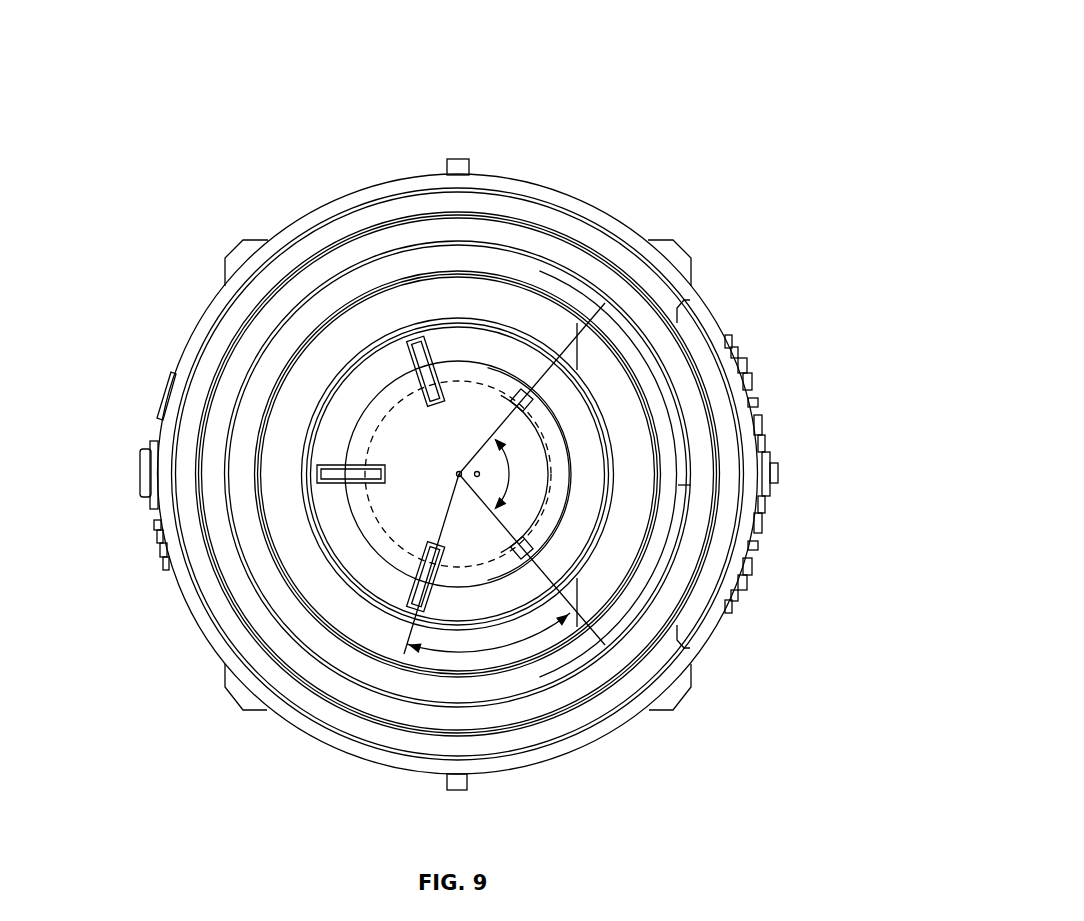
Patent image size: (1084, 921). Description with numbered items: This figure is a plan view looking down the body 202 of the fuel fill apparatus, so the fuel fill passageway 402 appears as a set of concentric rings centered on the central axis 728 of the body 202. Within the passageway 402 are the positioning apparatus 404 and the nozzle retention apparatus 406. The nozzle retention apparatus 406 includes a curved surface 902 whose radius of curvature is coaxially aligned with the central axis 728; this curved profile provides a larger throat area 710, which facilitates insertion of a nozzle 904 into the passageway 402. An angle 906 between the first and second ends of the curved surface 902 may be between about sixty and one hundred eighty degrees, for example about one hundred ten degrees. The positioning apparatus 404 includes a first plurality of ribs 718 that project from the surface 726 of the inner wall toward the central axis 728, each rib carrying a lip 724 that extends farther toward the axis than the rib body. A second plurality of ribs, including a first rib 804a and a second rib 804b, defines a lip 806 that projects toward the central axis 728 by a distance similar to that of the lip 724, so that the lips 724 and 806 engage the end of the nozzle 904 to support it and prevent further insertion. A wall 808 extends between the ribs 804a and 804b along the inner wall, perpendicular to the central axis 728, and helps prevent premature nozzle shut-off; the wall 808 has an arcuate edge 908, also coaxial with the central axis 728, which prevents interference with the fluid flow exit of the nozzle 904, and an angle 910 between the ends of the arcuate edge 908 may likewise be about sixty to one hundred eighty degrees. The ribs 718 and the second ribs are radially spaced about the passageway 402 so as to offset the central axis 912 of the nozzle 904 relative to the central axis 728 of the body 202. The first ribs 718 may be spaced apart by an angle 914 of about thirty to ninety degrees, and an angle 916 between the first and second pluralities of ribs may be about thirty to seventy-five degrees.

The body 202 is at (723, 60).
The fuel fill passageway 402 is at (433, 398).
The positioning apparatus 404 is at (366, 440).
The nozzle retention apparatus 406 is at (778, 473).
The throat area 710 is at (437, 300).
The first plurality of ribs 718 is at (350, 329).
The lip 724 is at (387, 397).
The surface 726 is at (300, 395).
The central axis 728 is at (459, 472).
The wall 808 is at (562, 500).
The first rib 804a is at (602, 640).
The second rib 804b is at (605, 312).
The lip 806 is at (522, 474).
The curved surface 902 is at (603, 410).
The nozzle 904 is at (485, 382).
The angle 906 is at (627, 548).
The arcuate edge 908 is at (552, 480).
The angle 910 is at (480, 480).
The central axis of the nozzle 912 is at (477, 471).
The angle 914 is at (380, 533).
The angle 916 is at (497, 650).